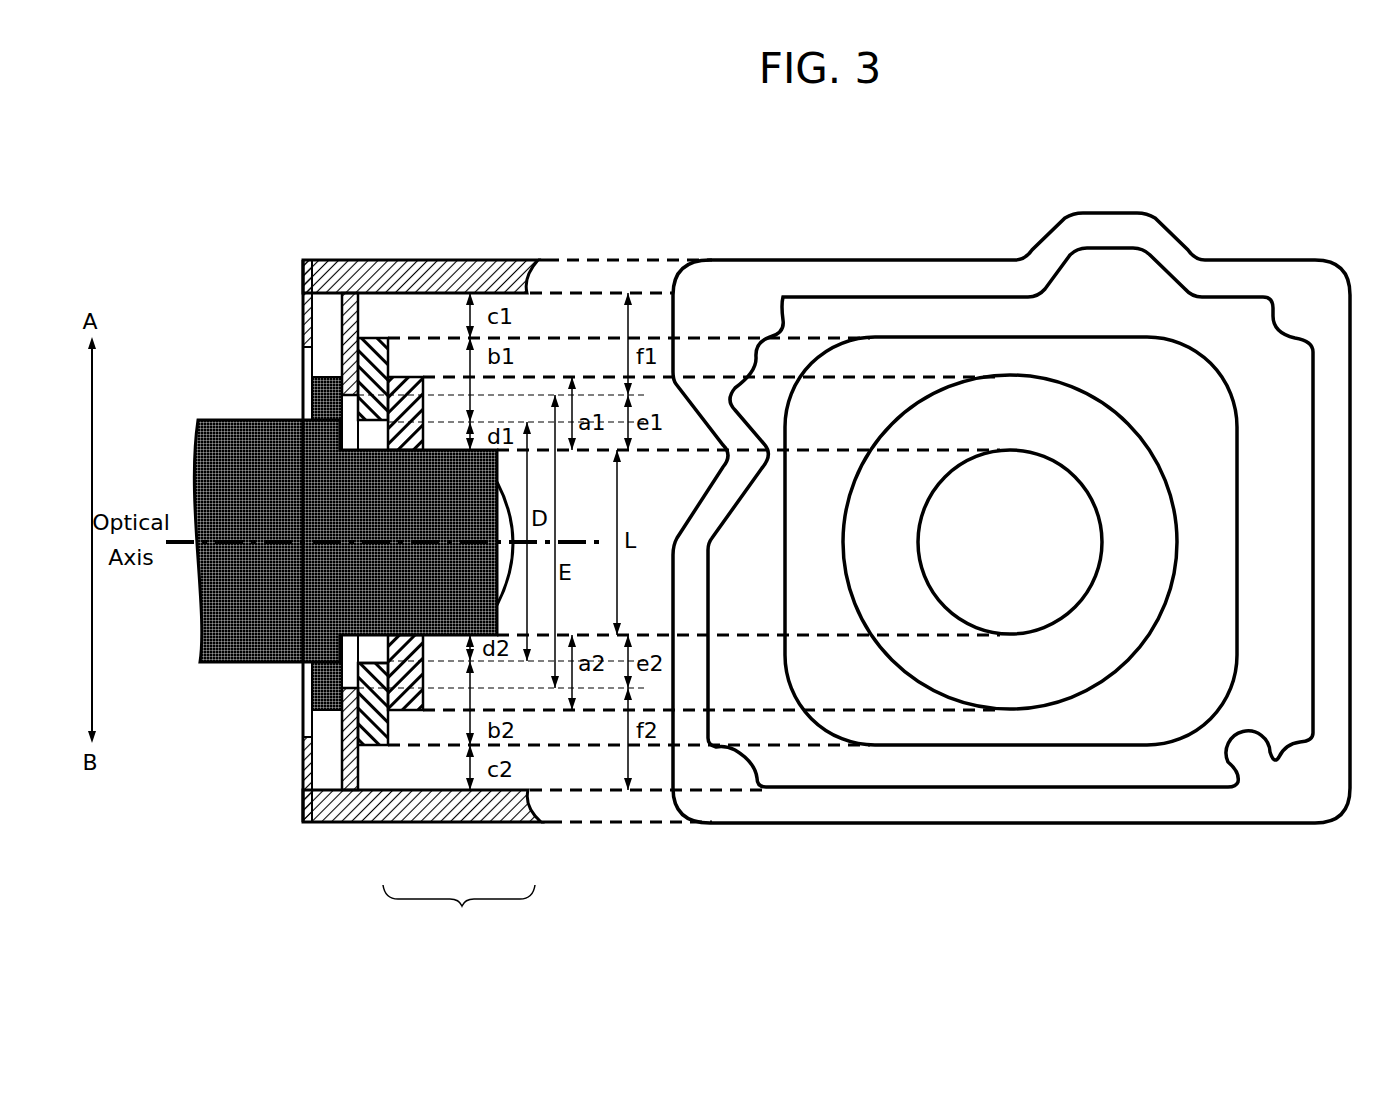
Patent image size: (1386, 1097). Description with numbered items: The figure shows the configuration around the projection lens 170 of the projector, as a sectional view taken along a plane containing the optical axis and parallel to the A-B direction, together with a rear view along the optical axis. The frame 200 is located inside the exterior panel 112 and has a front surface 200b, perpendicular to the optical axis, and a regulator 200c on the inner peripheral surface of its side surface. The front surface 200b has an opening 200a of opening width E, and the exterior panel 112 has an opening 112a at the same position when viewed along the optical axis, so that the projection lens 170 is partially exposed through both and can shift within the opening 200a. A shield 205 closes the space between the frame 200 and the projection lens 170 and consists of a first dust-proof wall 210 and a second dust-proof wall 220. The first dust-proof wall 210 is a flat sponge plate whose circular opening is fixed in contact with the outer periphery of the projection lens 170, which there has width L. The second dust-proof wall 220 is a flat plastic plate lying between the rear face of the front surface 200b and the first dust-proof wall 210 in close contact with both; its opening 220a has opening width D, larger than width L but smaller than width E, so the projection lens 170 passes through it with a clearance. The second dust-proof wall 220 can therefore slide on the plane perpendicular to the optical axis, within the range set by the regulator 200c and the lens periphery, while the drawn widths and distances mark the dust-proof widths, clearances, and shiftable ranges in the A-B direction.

The frame 200 is at (460, 278).
The opening 200a is at (317, 393).
The front surface 200b is at (348, 335).
The regulator 200c is at (375, 291).
The projection lens 170 is at (242, 475).
The first dust-proof wall 210 is at (412, 702).
The second dust-proof wall 220 is at (372, 742).
The opening 220a is at (368, 652).
The exterior panel 112 is at (302, 778).
The opening 112a is at (302, 710).
The shield 205 is at (459, 909).